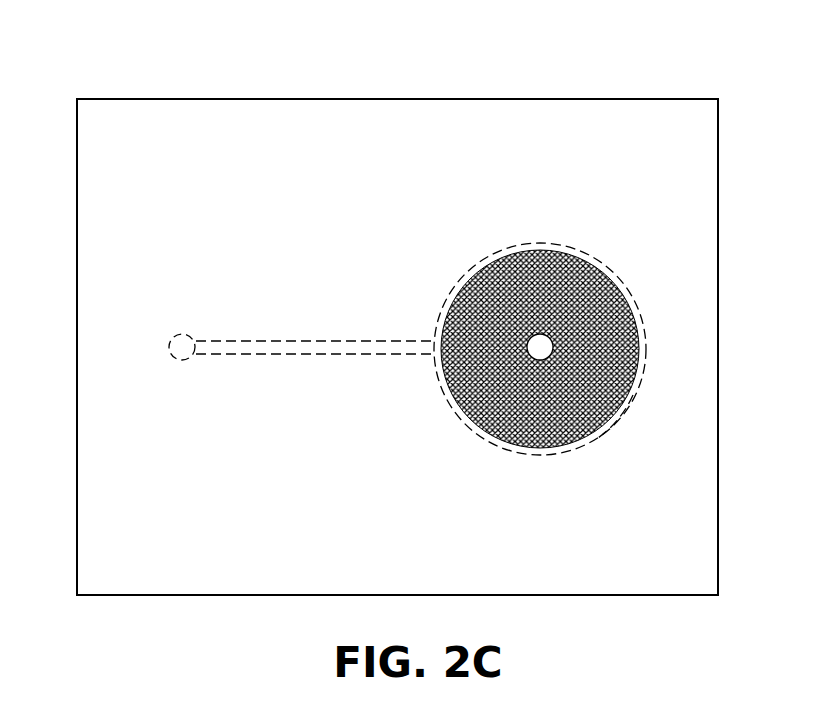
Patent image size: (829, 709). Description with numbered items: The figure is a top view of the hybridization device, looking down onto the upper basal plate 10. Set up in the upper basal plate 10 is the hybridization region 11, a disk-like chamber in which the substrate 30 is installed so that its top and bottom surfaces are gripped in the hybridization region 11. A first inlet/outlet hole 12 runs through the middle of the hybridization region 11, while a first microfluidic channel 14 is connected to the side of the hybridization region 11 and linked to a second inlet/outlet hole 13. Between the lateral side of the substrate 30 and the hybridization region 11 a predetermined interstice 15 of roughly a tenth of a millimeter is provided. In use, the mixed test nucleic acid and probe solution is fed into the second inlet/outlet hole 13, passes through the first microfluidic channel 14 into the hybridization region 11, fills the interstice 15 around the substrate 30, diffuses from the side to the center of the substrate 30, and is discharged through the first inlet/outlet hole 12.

The upper basal plate 10 is at (737, 188).
The hybridization region 11 is at (598, 438).
The first inlet/outlet hole 12 is at (553, 343).
The second inlet/outlet hole 13 is at (171, 344).
The first microfluidic channel 14 is at (292, 355).
The interstice 15 is at (633, 395).
The substrate 30 is at (524, 243).